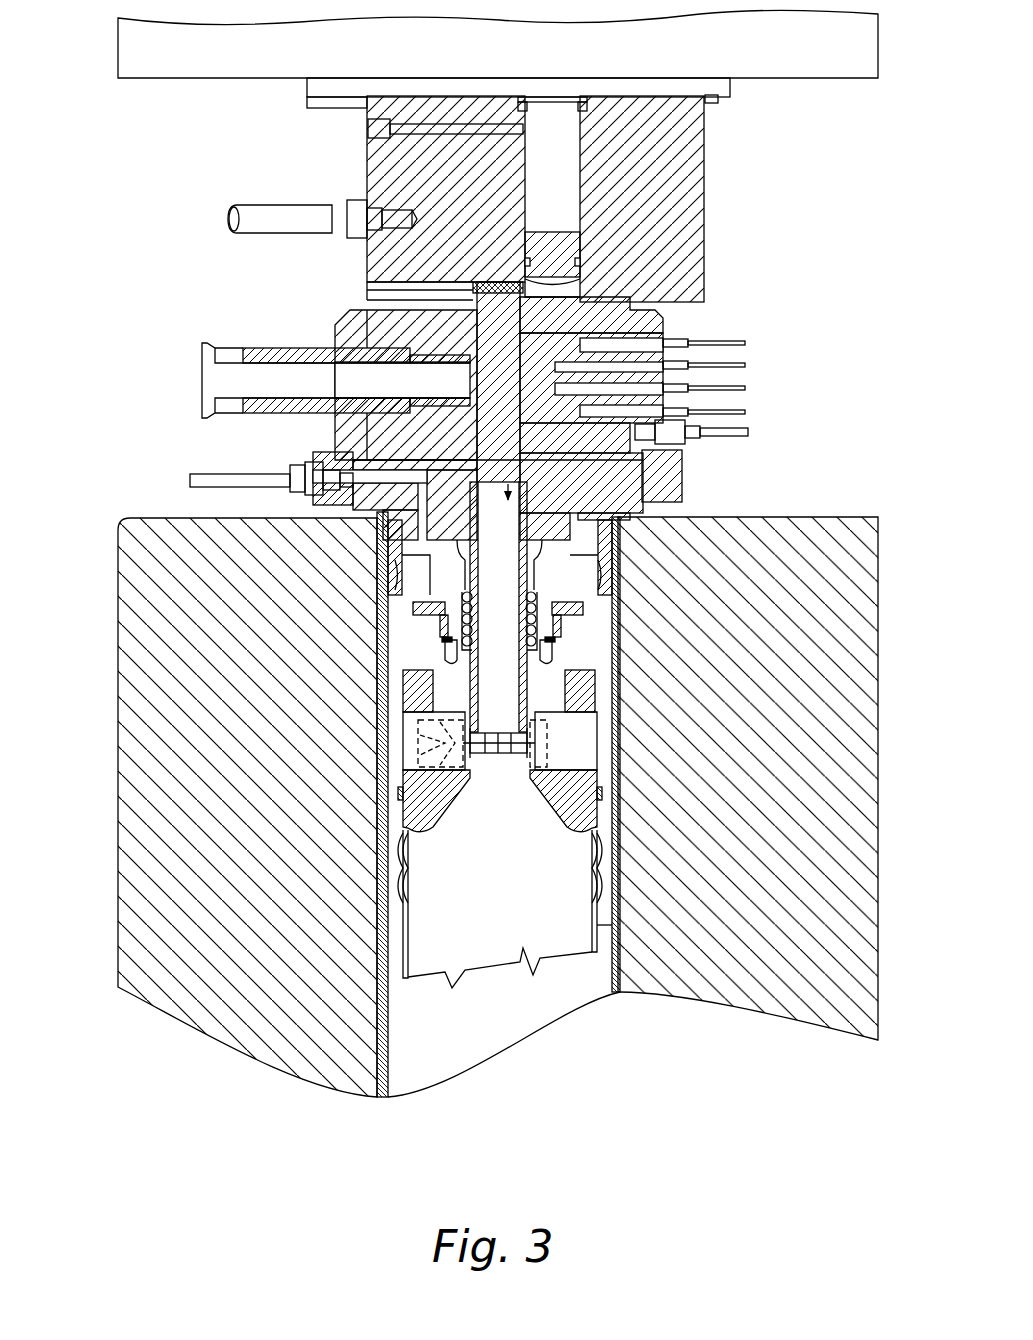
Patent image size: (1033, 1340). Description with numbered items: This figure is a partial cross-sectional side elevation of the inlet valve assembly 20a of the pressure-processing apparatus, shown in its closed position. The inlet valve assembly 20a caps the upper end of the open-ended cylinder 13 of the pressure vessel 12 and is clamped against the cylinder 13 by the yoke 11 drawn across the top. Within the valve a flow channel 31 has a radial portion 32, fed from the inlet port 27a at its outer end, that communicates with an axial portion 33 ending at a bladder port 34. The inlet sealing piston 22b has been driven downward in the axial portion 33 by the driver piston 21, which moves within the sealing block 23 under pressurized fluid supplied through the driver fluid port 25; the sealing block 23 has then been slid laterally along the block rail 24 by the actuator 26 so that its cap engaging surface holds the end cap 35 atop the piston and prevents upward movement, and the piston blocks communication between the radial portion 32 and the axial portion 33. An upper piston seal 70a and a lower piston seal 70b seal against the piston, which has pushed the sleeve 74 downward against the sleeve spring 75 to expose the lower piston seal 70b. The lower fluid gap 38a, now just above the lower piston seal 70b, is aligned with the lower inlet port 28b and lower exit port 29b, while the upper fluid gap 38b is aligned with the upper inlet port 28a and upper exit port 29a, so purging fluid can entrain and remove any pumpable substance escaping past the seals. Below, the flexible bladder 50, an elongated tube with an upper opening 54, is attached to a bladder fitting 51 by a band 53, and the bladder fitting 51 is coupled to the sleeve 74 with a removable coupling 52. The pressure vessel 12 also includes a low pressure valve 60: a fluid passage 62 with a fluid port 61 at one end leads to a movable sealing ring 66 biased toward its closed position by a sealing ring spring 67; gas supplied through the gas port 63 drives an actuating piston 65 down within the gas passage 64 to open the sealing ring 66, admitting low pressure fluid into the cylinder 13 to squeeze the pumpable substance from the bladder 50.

The yoke 11 is at (292, 69).
The pressure vessel 12 is at (97, 566).
The open-ended cylinder 13 is at (118, 712).
The inlet valve assembly 20a is at (806, 159).
The driver piston 21 is at (568, 245).
The flange plate 22b is at (340, 298).
The sealing block 23 is at (697, 160).
The block rail 24 is at (730, 90).
The driver fluid port 25 is at (368, 126).
The actuator 26 is at (250, 210).
The inlet port 27a is at (208, 350).
The upper inlet port 28a is at (700, 348).
The lower inlet port 28b is at (700, 415).
The upper exit port 29a is at (700, 370).
The lower exit port 29b is at (700, 393).
The flow channel 31 is at (335, 385).
The radial portion 32 is at (270, 385).
The axial portion 33 is at (500, 498).
The bladder port 34 is at (518, 726).
The end cap 35 is at (470, 290).
The lower fluid gap 38a is at (648, 468).
The upper fluid gap 38b is at (560, 325).
The flexible bladder 50 is at (612, 925).
The bladder fitting 51 is at (585, 810).
The removable coupling 52 is at (402, 728).
The band 53 is at (398, 793).
The upper opening 54 is at (575, 842).
The low pressure valve 60 is at (295, 508).
The fluid port 61 is at (282, 476).
The fluid passage 62 is at (420, 540).
The gas port 63 is at (690, 436).
The gas passage 64 is at (612, 545).
The actuating piston 65 is at (580, 603).
The movable sealing ring 66 is at (560, 627).
The sealing ring spring 67 is at (570, 648).
The upper piston seal 70a is at (640, 330).
The lower piston seal 70b is at (632, 514).
The sleeve 74 is at (474, 593).
The sleeve spring 75 is at (473, 615).